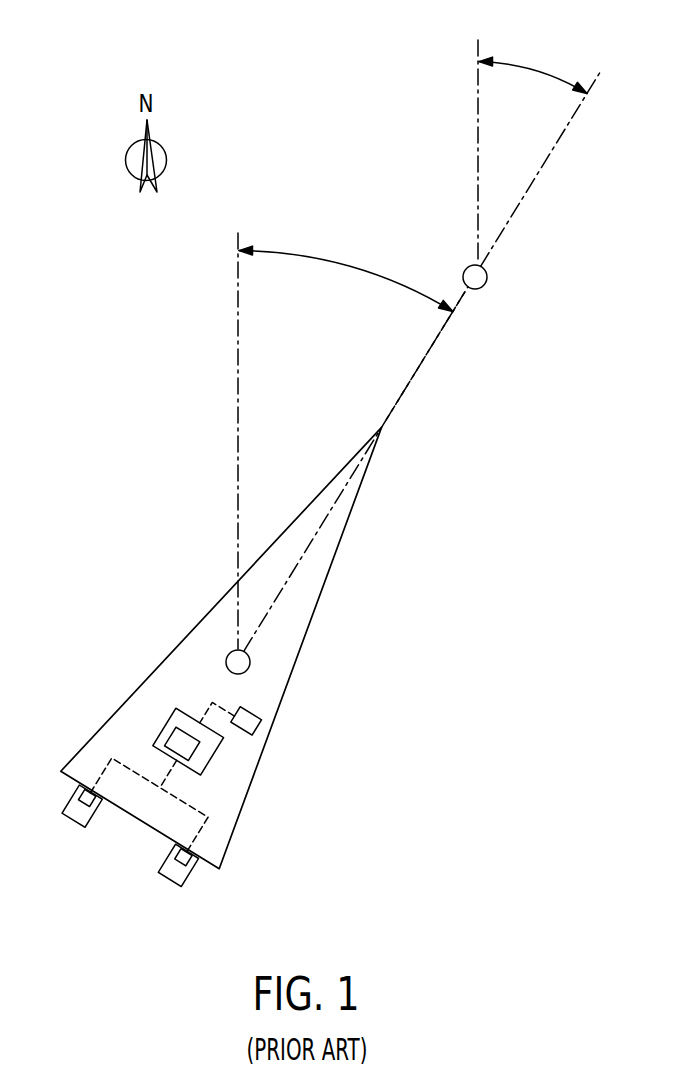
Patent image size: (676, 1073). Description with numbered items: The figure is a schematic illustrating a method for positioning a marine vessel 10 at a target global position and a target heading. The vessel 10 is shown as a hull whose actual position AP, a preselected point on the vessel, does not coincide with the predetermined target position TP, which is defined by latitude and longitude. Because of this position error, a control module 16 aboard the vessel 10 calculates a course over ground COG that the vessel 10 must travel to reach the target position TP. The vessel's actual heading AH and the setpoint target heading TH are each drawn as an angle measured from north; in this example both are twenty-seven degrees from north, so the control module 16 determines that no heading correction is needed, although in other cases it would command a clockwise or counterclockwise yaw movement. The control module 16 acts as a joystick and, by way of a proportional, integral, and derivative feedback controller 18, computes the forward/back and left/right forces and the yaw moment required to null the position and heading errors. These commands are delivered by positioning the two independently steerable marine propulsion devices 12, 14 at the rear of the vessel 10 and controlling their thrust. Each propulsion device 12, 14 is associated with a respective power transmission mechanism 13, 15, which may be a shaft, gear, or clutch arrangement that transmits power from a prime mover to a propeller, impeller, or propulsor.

The marine vessel 10 is at (313, 613).
The marine propulsion device 12 is at (70, 801).
The power transmission mechanism 13 is at (88, 812).
The marine propulsion device 14 is at (158, 874).
The power transmission mechanism 15 is at (188, 870).
The control module 16 is at (208, 767).
The feedback controller 18 is at (172, 737).
The actual position AP is at (227, 667).
The target position TP is at (478, 289).
The course over ground COG is at (425, 356).
The actual heading AH is at (346, 275).
The target heading TH is at (533, 66).